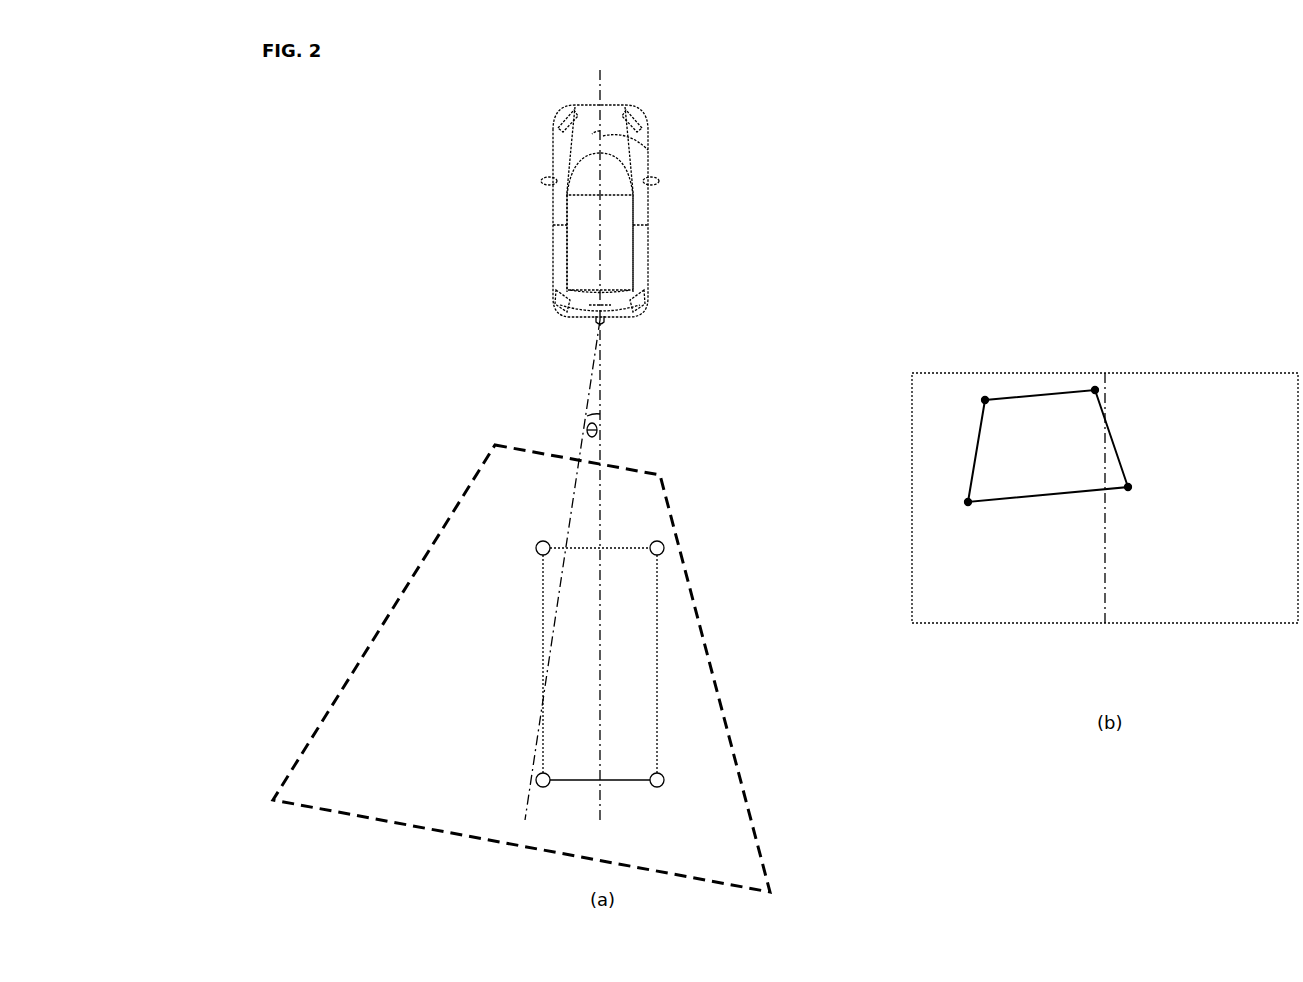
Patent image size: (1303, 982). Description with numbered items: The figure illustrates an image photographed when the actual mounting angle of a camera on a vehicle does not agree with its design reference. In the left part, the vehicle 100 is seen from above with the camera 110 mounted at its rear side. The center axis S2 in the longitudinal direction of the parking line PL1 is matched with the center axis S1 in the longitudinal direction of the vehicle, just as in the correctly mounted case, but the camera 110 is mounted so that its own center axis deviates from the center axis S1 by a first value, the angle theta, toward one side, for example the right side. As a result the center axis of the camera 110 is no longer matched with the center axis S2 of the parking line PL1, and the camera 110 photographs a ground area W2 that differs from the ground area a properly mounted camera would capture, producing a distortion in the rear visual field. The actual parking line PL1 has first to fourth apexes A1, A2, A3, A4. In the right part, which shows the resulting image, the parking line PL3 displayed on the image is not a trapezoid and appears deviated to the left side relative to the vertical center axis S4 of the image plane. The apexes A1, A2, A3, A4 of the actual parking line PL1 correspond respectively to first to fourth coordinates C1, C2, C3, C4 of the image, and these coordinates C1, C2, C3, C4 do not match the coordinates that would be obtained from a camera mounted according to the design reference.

The vehicle 100 is at (553, 143).
The camera 110 is at (597, 322).
The center axis in a longitudinal direction of the vehicle S1 is at (605, 136).
The center axis in a longitudinal direction of the parking line S2 is at (600, 680).
The parking line PL1 is at (547, 673).
The ground area W2 is at (380, 625).
The first apex A1 is at (664, 780).
The second apex A2 is at (536, 780).
The third apex A3 is at (664, 548).
The fourth apex A4 is at (536, 548).
The first coordinate C1 is at (972, 400).
The second coordinate C2 is at (1108, 390).
The third coordinate C3 is at (957, 503).
The fourth coordinate C4 is at (1141, 488).
The parking line displayed on an image PL3 is at (1037, 495).
The vertical center axis of a plane of the image S4 is at (1105, 585).